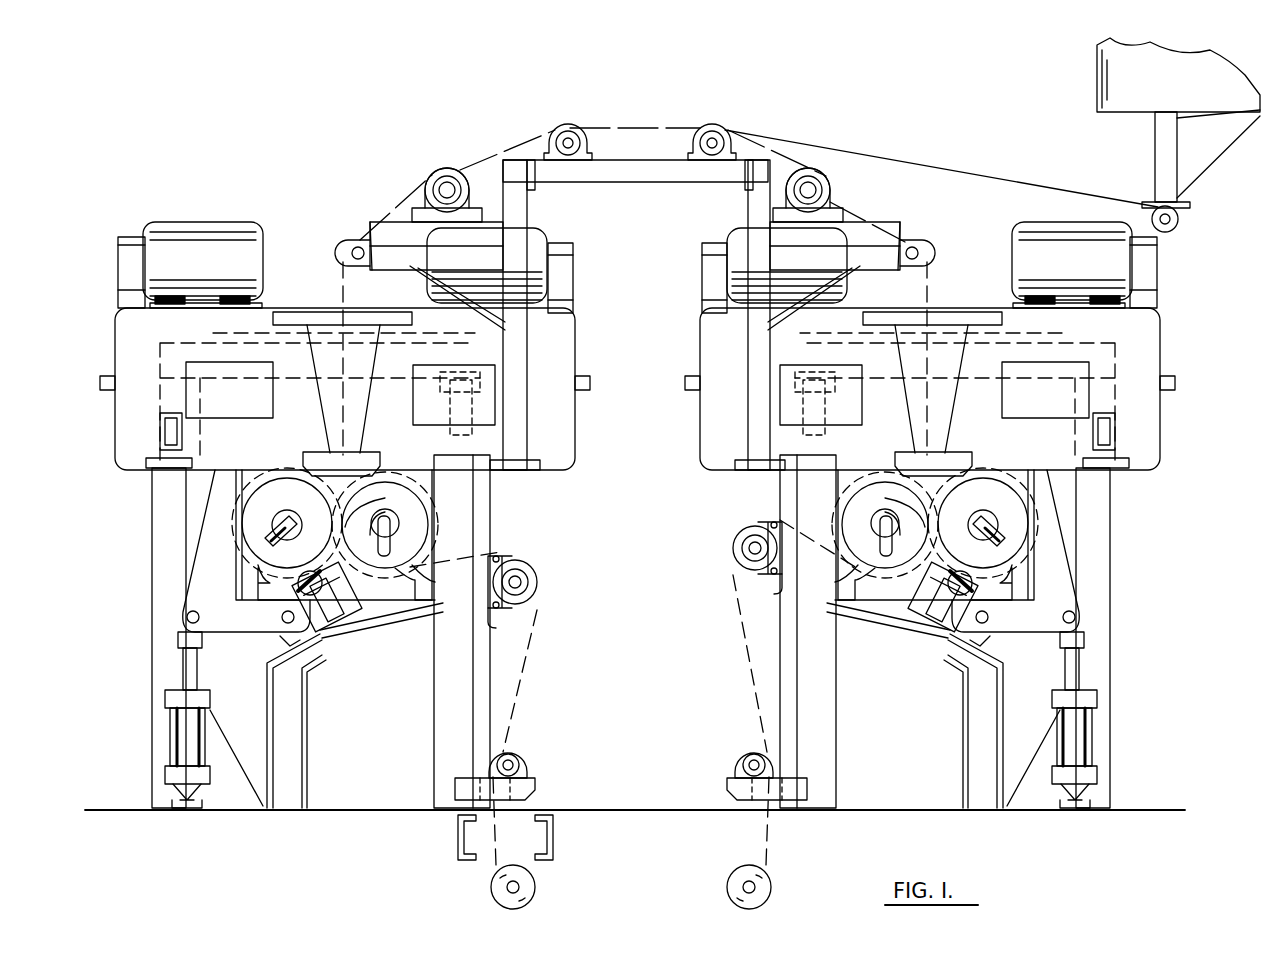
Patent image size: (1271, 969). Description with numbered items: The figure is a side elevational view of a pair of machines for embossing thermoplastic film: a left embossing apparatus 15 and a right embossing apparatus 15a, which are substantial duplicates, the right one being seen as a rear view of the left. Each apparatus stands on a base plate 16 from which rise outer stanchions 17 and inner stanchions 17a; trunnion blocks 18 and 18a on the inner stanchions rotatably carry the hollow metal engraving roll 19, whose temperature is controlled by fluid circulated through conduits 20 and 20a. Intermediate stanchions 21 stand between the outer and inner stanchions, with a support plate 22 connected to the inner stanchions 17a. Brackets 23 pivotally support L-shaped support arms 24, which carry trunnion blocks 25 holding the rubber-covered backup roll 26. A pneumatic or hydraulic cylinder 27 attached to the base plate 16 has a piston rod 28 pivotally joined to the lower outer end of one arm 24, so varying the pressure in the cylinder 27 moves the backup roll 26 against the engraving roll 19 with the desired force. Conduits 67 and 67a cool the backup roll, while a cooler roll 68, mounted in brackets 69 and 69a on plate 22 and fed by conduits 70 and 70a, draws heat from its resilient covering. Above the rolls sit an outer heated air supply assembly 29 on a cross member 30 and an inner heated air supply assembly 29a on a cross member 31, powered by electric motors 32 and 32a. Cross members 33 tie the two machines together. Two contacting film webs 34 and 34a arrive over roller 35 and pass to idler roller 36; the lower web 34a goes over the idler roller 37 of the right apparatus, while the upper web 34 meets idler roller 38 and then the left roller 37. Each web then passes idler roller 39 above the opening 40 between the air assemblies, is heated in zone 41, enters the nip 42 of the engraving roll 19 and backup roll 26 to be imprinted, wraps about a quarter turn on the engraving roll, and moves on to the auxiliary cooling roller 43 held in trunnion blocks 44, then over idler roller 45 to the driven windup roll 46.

The left embossing apparatus 15 is at (340, 208).
The right embossing apparatus 15a is at (935, 240).
The base plate 16 is at (322, 806).
The outer vertical support stanchion 17 is at (160, 578).
The inner vertical support stanchion 17a is at (440, 720).
The trunnion block 18 is at (420, 488).
The trunnion block 18a is at (845, 524).
The engraving roll 19 is at (395, 475).
The conduit 20 is at (392, 548).
The conduit 20a is at (878, 523).
The intermediate vertical stanchion 21 is at (290, 728).
The support plate 22 is at (380, 618).
The bracket 23 is at (285, 640).
The L-shaped support arm 24 is at (625, 551).
The trunnion block 25 is at (623, 534).
The backup roll 26 is at (286, 475).
The cylinder 27 is at (186, 740).
The piston rod 28 is at (184, 665).
The outer heated air supply assembly 29 is at (102, 452).
The inner heated air supply assembly 29a is at (590, 332).
The cross member 30 is at (168, 430).
The cross member 31 is at (462, 405).
The electric motor 32 is at (185, 240).
The electric motor 32a is at (530, 240).
The cross member 33 is at (655, 183).
The web of plastic film 34 is at (343, 290).
The web of plastic film 34a is at (990, 175).
The roller 35 is at (1178, 228).
The idler roller 36 is at (716, 127).
The idler roller 37 is at (438, 175).
The idler roller 38 is at (572, 127).
The idler roller 39 is at (343, 245).
The opening 40 is at (360, 385).
The zone 41 is at (345, 455).
The nip 42 is at (352, 515).
The auxiliary cooling roller 43 is at (525, 560).
The trunnion block 44 is at (500, 632).
The idler roller 45 is at (515, 758).
The windup roll 46 is at (535, 878).
The conduit 67 is at (272, 530).
The conduit 67a is at (981, 538).
The cooler roll 68 is at (306, 590).
The bracket 69 is at (352, 604).
The bracket 69a is at (920, 604).
The conduit 70 is at (290, 610).
The conduit 70a is at (982, 612).